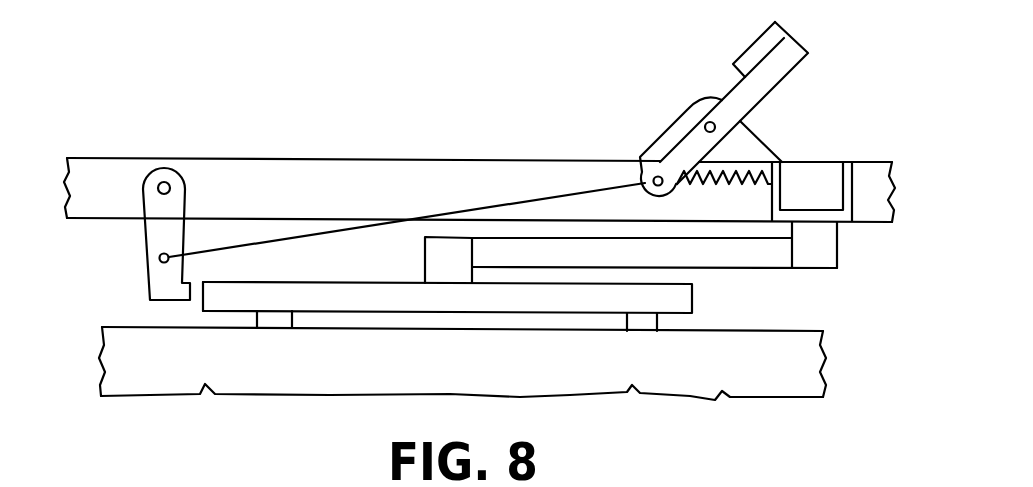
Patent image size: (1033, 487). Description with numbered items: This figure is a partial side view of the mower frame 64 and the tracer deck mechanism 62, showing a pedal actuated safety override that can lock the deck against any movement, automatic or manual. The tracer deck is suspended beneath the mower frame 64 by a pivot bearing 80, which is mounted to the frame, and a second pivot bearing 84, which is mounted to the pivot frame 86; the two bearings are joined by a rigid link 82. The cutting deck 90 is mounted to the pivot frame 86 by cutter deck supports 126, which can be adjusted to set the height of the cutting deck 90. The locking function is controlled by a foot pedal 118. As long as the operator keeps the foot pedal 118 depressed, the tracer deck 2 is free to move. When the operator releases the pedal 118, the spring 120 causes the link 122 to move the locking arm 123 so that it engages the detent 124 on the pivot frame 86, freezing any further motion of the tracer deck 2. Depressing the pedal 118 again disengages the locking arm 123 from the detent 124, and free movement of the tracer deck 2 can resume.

The tracer deck 2 is at (92, 318).
The tracer deck mechanism 62 is at (118, 234).
The mower frame 64 is at (329, 159).
The pivot bearing 80 is at (858, 162).
The rigid link 82 is at (750, 268).
The pivot bearing 84 is at (456, 252).
The pivot frame 86 is at (360, 300).
The cutting deck 90 is at (800, 379).
The foot pedal 118 is at (738, 54).
The spring 120 is at (740, 166).
The link 122 is at (328, 233).
The locking arm 123 is at (148, 280).
The detent 124 is at (200, 288).
The cutter deck supports 126 is at (280, 317).